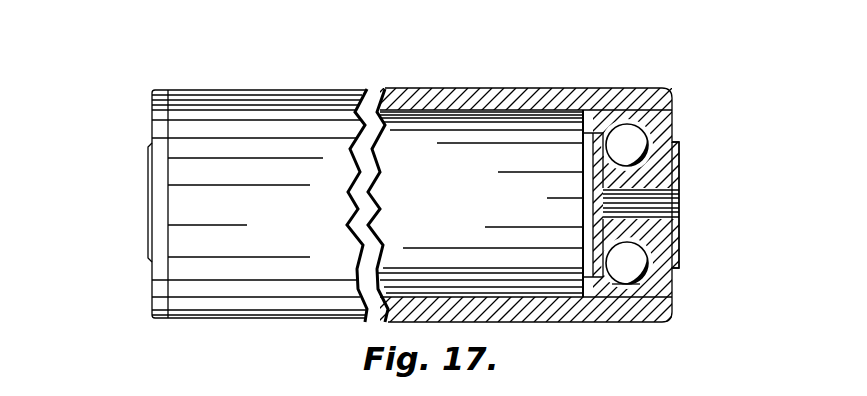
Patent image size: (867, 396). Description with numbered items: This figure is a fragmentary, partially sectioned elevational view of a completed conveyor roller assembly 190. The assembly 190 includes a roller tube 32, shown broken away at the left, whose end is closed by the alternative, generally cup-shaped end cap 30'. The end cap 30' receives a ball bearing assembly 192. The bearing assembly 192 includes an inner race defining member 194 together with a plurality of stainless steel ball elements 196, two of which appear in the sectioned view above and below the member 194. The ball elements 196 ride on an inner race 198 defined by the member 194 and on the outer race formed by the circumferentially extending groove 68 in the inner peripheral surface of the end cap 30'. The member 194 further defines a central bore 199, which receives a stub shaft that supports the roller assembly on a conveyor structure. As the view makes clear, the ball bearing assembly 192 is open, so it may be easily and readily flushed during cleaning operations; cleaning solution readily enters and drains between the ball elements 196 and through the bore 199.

The end cap 30' is at (472, 200).
The roller tube 32 is at (195, 195).
The conveyor roller assembly 190 is at (309, 50).
The ball bearing assembly 192 is at (700, 168).
The inner race defining member 194 is at (667, 236).
The ball elements 196 is at (627, 145).
The inner race 198 is at (582, 239).
The central bore 199 is at (640, 204).
The groove 68 is at (626, 288).